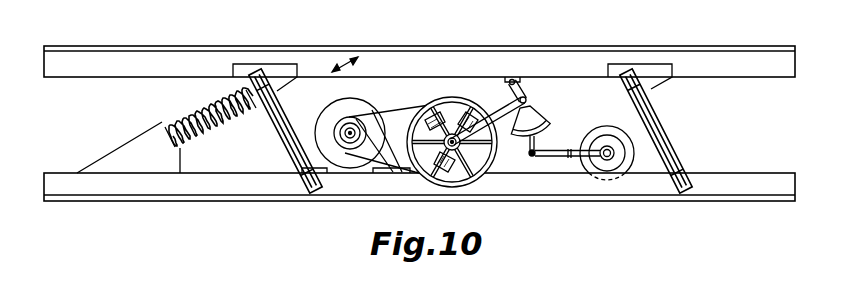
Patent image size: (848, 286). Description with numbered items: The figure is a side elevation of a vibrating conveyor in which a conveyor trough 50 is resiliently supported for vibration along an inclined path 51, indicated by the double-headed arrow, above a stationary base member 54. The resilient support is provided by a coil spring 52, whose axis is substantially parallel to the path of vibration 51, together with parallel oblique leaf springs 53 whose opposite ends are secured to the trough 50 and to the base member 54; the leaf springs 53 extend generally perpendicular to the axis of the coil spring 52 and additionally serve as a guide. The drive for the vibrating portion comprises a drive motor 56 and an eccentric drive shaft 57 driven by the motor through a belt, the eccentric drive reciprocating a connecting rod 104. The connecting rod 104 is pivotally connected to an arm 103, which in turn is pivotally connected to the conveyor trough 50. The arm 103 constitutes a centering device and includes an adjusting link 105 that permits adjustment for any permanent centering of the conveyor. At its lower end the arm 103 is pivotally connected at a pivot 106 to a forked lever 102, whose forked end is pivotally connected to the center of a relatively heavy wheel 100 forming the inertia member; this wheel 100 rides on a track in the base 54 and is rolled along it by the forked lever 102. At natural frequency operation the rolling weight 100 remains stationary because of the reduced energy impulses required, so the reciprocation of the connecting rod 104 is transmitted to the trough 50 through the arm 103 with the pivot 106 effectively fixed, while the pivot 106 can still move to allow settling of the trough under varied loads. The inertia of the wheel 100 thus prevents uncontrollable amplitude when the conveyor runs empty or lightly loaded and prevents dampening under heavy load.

The conveyor trough 50 is at (419, 61).
The inclined path 51 is at (343, 57).
The coil spring 52 is at (187, 105).
The leaf spring 53 is at (275, 132).
The base member 54 is at (230, 203).
The drive motor 56 is at (322, 120).
The eccentric drive shaft 57 is at (448, 135).
The wheel 100 is at (597, 126).
The forked lever 102 is at (558, 149).
The arm 103 is at (531, 115).
The connecting rod 104 is at (503, 107).
The adjusting link 105 is at (527, 143).
The pivot 106 is at (534, 156).